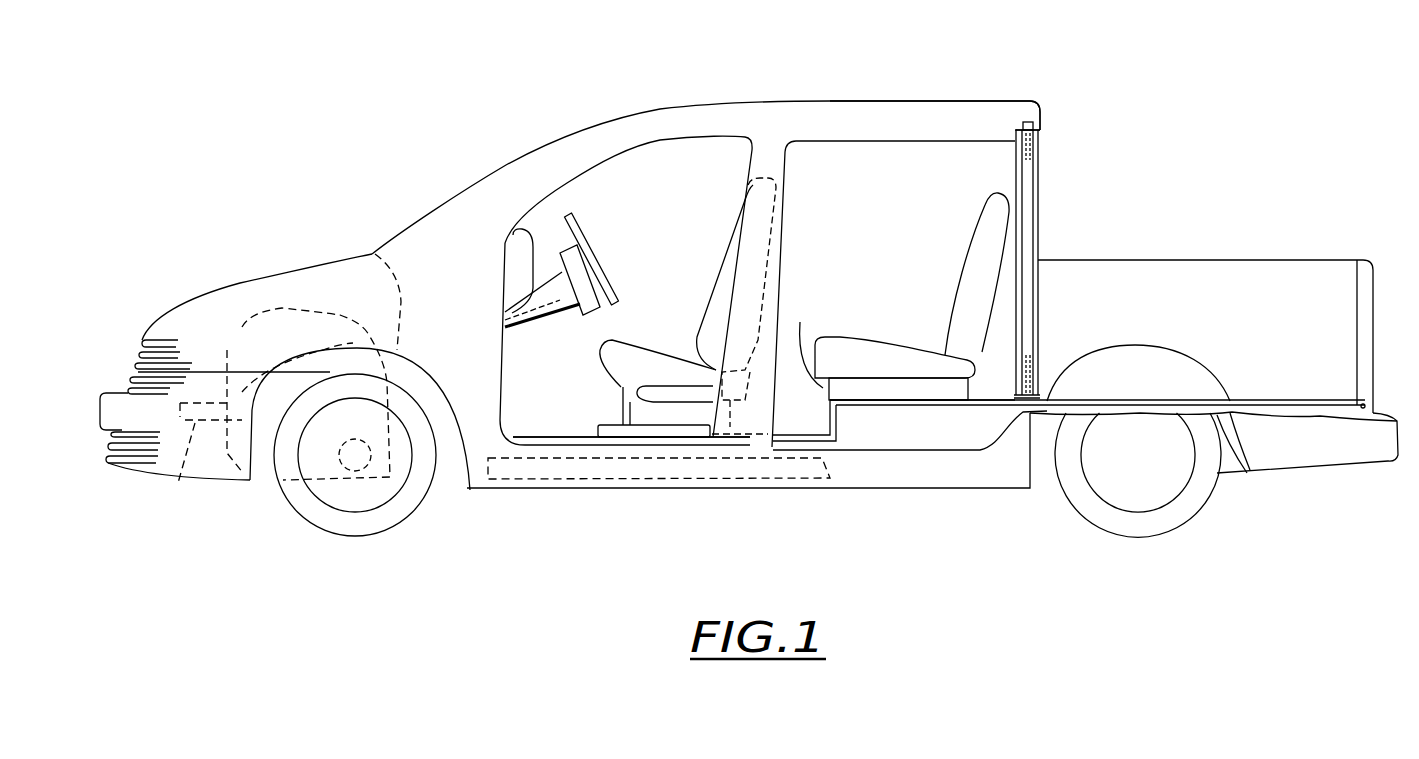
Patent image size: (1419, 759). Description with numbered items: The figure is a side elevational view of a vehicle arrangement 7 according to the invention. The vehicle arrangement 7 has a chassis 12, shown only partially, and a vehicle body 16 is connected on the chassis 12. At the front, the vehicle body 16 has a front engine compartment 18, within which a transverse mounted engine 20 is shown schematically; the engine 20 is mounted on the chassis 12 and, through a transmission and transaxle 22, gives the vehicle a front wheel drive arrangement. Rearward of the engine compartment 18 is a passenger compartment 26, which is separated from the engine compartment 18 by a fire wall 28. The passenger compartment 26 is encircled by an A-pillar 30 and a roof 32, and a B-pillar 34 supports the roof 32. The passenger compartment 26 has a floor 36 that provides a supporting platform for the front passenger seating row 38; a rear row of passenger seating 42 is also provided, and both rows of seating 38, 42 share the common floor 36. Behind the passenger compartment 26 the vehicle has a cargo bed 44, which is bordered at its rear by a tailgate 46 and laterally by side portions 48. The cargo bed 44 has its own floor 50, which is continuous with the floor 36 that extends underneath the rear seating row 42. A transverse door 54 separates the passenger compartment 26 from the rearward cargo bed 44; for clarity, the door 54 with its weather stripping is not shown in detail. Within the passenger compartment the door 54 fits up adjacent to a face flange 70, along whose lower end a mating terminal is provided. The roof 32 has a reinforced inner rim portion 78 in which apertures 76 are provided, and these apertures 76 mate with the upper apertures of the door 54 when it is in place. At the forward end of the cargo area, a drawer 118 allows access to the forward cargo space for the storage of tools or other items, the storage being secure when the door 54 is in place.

The vehicle arrangement 7 is at (708, 46).
The chassis 12 is at (694, 487).
The vehicle body 16 is at (528, 159).
The front engine compartment 18 is at (297, 268).
The transverse mounted engine 20 is at (245, 342).
The transmission and transaxle 22 is at (392, 433).
The passenger compartment 26 is at (893, 184).
The fire wall 28 is at (412, 297).
The A-pillar 30 is at (580, 181).
The roof 32 is at (863, 101).
The B-pillar 34 is at (786, 172).
The floor 36 is at (549, 428).
The front passenger seating row 38 is at (633, 355).
The rear row of passenger seating 42 is at (860, 343).
The cargo bed 44 is at (1206, 272).
The tailgate 46 is at (1376, 272).
The side portions 48 is at (1275, 275).
The floor of the cargo bed 50 is at (1077, 397).
The transverse door 54 is at (1040, 184).
The face flange 70 is at (1040, 138).
The apertures 76 is at (1041, 127).
The reinforced inner rim portion 78 is at (1032, 108).
The drawer 118 is at (812, 341).